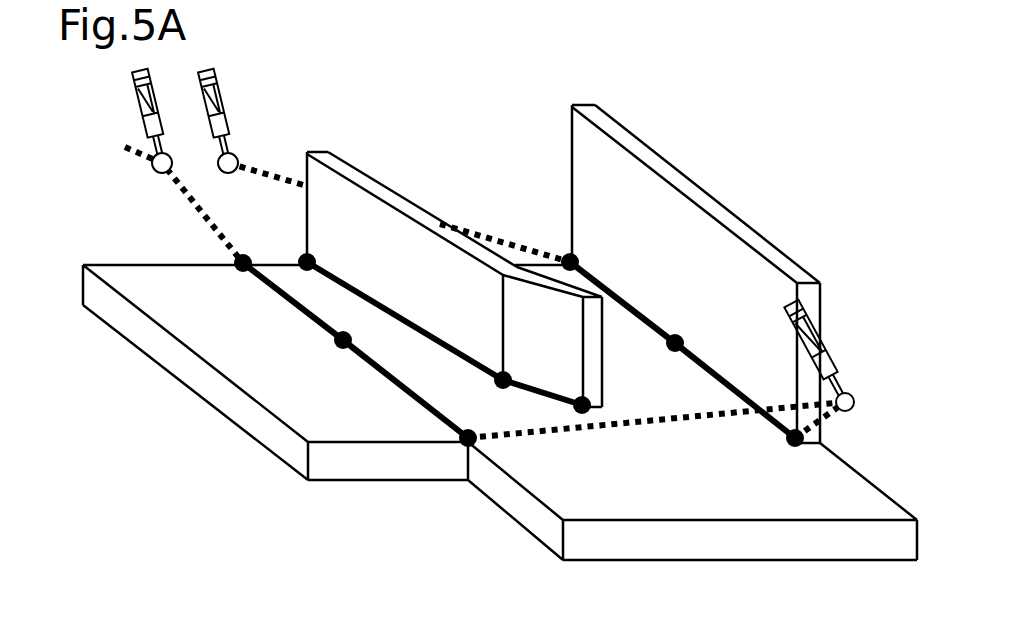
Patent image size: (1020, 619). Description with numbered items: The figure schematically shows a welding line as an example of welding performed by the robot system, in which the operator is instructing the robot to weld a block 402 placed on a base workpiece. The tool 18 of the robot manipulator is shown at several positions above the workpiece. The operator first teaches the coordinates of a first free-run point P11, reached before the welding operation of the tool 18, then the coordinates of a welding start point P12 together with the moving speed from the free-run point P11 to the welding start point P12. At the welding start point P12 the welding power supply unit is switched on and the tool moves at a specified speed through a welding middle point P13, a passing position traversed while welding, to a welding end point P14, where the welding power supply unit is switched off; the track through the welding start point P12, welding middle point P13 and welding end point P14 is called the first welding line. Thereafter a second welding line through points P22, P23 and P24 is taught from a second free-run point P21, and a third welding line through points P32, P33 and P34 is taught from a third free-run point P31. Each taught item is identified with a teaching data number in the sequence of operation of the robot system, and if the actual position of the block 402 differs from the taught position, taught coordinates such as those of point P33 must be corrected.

The tool 18 is at (150, 127).
The block 402 is at (423, 221).
The first free-run point P11 is at (143, 179).
The welding start point P12 is at (225, 279).
The welding middle point P13 is at (324, 357).
The welding end point P14 is at (450, 455).
The second free-run point P21 is at (862, 391).
The second welding line start point P22 is at (776, 454).
The second welding line middle point P23 is at (664, 363).
The second welding line end point P24 is at (591, 251).
The third free-run point P31 is at (248, 152).
The third welding line start point P32 is at (330, 254).
The third welding line middle point P33 is at (495, 397).
The third welding line end point P34 is at (582, 430).